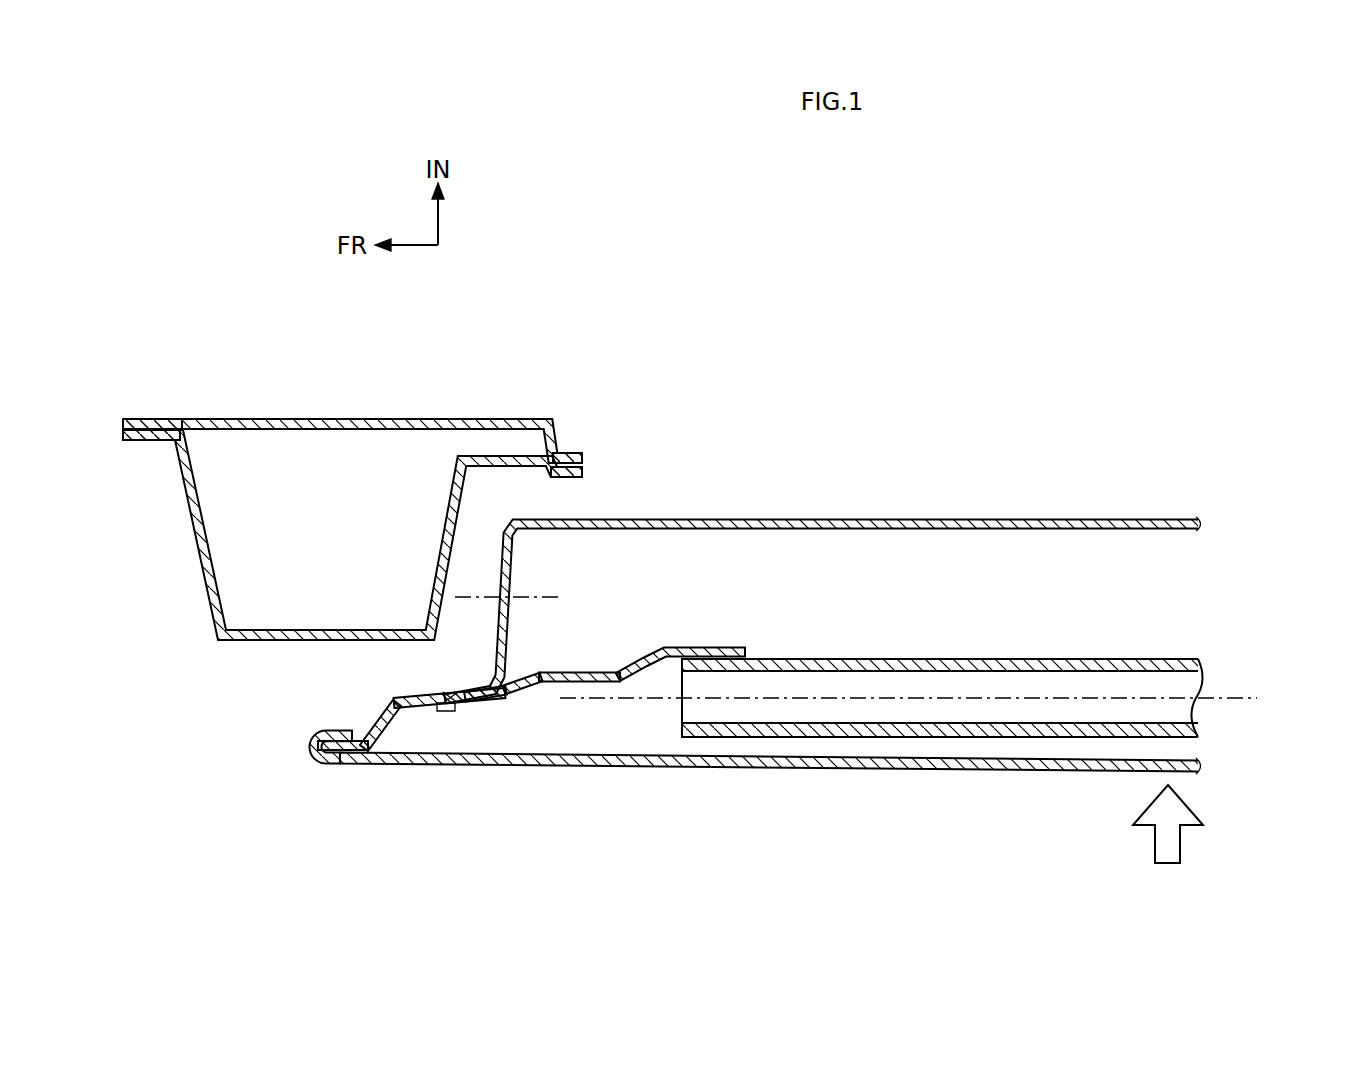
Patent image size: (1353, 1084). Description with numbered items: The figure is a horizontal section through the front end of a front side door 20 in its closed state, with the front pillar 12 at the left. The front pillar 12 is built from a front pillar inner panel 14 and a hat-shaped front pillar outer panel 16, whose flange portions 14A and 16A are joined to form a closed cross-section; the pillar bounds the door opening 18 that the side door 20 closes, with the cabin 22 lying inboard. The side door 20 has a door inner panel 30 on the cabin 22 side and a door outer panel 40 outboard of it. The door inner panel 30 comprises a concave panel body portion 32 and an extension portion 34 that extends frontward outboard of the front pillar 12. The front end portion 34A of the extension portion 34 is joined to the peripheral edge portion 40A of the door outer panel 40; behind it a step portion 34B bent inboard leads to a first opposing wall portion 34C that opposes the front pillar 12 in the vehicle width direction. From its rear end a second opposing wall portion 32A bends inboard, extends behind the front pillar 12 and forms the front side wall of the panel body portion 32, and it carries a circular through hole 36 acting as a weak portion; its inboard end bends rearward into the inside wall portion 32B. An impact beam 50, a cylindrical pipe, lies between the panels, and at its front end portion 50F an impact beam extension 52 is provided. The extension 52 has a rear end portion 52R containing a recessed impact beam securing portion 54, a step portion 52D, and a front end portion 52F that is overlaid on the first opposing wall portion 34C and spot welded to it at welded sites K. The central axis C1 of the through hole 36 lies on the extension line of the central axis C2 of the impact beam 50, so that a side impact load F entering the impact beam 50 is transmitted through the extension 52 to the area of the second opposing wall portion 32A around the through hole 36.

The front pillar 12 is at (190, 640).
The front pillar inner panel 14 is at (359, 408).
The flange portion 14A is at (140, 418).
The front pillar outer panel 16 is at (178, 554).
The flange portion 16A is at (133, 442).
The door opening 18 is at (460, 553).
The front side door 20 is at (1090, 408).
The cabin 22 is at (835, 326).
The door inner panel 30 is at (1059, 490).
The panel body portion 32 is at (985, 517).
The second opposing wall portion 32A is at (509, 658).
The inside wall portion 32B is at (850, 517).
The extension portion 34 is at (485, 857).
The front end portion 34A is at (350, 755).
The step portion 34B is at (382, 735).
The first opposing wall portion 34C is at (425, 715).
The through hole 36 is at (514, 547).
The door outer panel 40 is at (841, 783).
The peripheral edge portion 40A is at (322, 736).
The impact beam 50 is at (1052, 748).
The front end portion 50F is at (733, 738).
The impact beam extension 52 is at (562, 690).
The step portion 52D is at (530, 687).
The front end portion 52F is at (478, 705).
The rear end portion 52R is at (643, 647).
The impact beam securing portion 54 is at (657, 681).
The welded sites K is at (452, 705).
The central axis of the through hole C1 is at (458, 603).
The central axis of the impact beam C2 is at (1222, 690).
The side impact load F is at (1182, 842).